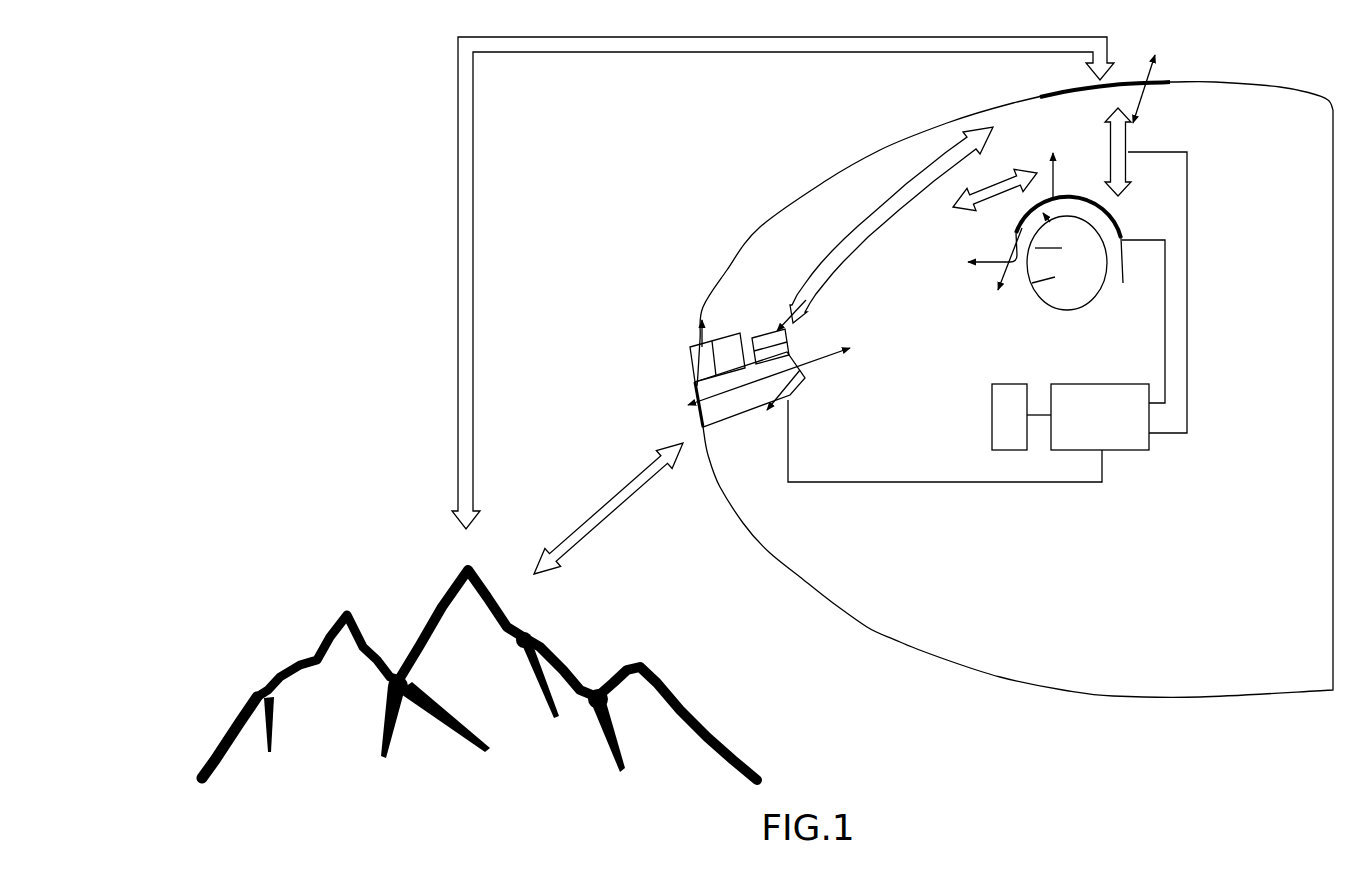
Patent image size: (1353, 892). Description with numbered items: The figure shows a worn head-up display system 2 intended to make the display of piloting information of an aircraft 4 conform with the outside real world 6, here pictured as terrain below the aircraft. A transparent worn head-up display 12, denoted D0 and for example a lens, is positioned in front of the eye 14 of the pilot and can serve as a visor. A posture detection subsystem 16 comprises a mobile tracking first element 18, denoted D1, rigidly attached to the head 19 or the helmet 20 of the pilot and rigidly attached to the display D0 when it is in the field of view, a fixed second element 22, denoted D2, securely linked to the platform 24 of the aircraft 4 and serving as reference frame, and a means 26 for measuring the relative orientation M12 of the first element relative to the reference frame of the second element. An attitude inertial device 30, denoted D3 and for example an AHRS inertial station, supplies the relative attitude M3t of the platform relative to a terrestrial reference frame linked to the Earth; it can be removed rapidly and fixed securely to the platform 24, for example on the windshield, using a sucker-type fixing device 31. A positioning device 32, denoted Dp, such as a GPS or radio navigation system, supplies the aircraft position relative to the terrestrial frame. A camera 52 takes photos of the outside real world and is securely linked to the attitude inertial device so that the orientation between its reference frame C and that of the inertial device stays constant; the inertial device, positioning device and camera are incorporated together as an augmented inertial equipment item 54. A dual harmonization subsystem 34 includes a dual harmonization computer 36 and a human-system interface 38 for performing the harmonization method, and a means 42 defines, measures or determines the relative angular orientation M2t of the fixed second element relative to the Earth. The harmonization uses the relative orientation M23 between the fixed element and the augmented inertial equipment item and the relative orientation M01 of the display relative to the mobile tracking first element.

The head-up display system 2 is at (886, 172).
The aircraft 4 is at (825, 546).
The outside real world 6 is at (296, 629).
The transparent worn head-up display 12 is at (1016, 222).
The eye 14 is at (1048, 255).
The posture detection subsystem 16 is at (1032, 146).
The mobile tracking first element 18 is at (1097, 203).
The head 19 is at (1027, 300).
The helmet 20 is at (1123, 283).
The fixed second element 22 is at (1100, 97).
The platform 24 is at (1216, 83).
The means for measuring and determining relative orientation 26 is at (1131, 137).
The attitude inertial device 30 is at (718, 427).
The fixing device 31 is at (695, 385).
The positioning device 32 is at (765, 343).
The dual harmonization subsystem 34 is at (1133, 468).
The dual harmonization computer 36 is at (1086, 431).
The human-system interface 38 is at (992, 425).
The means for determining relative angular orientation 42 is at (647, 50).
The camera 52 is at (693, 350).
The augmented inertial equipment item 54 is at (730, 311).
The camera reference frame C is at (669, 345).
The display D0 is at (1010, 251).
The mobile tracking first element D1 is at (1074, 175).
The fixed second element D2 is at (1165, 89).
The attitude inertial device D3 is at (770, 408).
The positioning device Dp is at (781, 311).
The relative orientation of display relative to first element M01 is at (995, 184).
The relative orientation of first element relative to second element M12 is at (1091, 151).
The relative orientation between fixed element and augmented inertial equipment M23 is at (891, 225).
The relative angular orientation of fixed second element relative to Earth M2t is at (783, 283).
The relative attitude of platform relative to terrestrial frame M3t is at (608, 508).